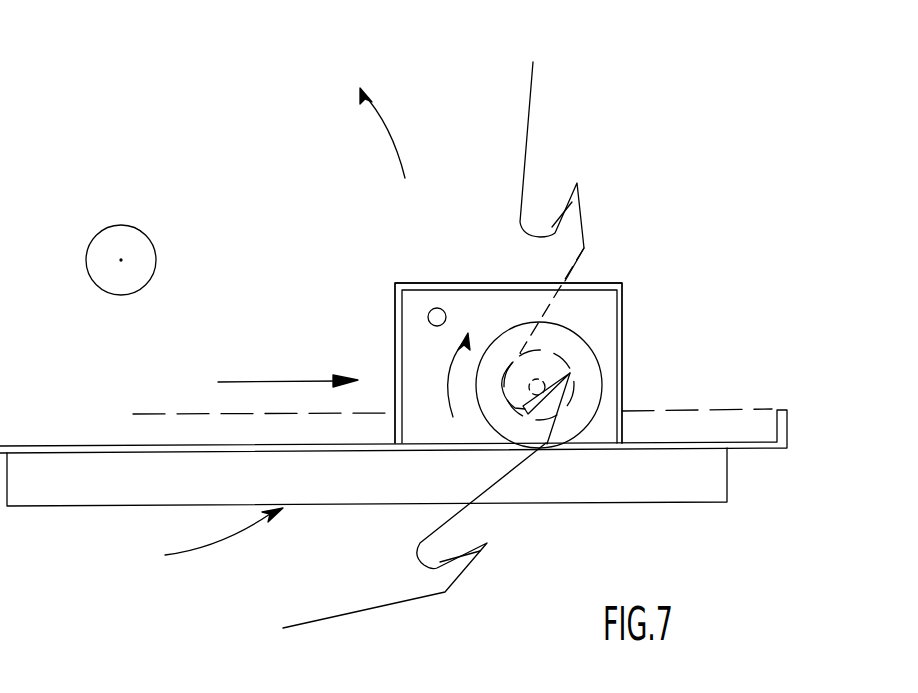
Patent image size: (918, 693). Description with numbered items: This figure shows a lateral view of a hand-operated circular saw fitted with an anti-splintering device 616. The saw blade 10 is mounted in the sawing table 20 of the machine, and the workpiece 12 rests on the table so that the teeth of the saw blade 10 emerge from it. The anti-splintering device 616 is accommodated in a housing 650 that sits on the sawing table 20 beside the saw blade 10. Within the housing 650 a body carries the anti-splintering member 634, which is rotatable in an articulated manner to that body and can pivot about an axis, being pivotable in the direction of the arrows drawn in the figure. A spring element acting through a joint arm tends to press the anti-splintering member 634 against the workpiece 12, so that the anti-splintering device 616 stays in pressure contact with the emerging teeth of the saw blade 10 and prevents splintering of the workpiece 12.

The saw blade 10 is at (534, 78).
The workpiece 12 is at (698, 480).
The sawing table 20 is at (787, 410).
The anti-splintering device 616 is at (700, 262).
The anti-splintering member 634 is at (592, 361).
The housing 650 is at (622, 283).